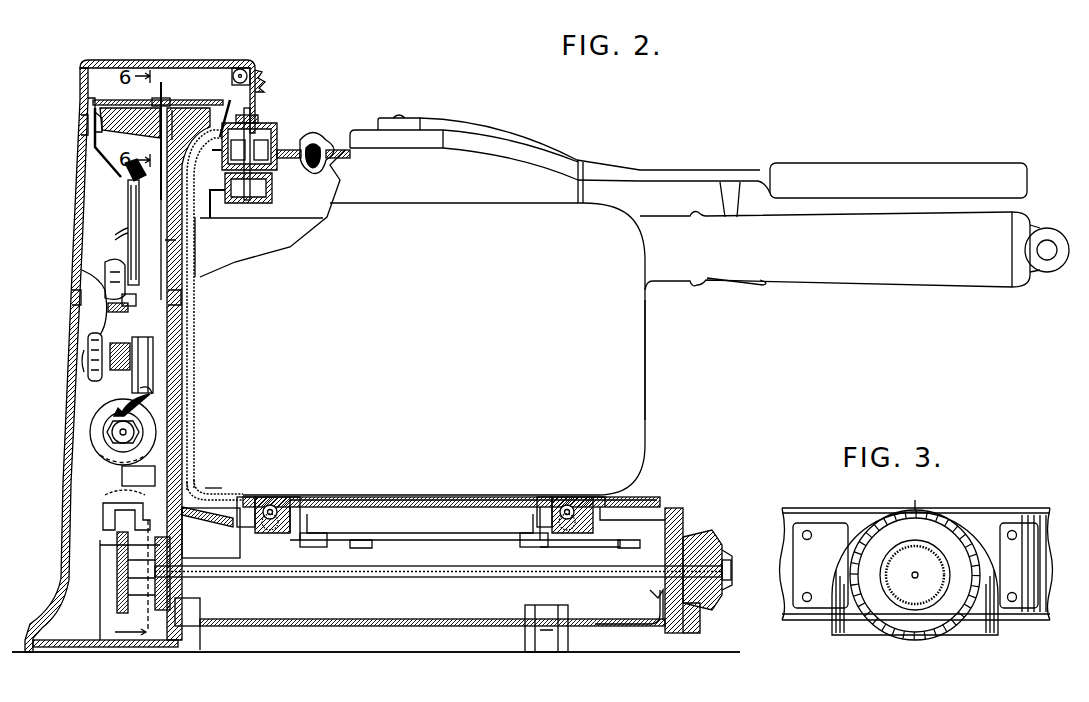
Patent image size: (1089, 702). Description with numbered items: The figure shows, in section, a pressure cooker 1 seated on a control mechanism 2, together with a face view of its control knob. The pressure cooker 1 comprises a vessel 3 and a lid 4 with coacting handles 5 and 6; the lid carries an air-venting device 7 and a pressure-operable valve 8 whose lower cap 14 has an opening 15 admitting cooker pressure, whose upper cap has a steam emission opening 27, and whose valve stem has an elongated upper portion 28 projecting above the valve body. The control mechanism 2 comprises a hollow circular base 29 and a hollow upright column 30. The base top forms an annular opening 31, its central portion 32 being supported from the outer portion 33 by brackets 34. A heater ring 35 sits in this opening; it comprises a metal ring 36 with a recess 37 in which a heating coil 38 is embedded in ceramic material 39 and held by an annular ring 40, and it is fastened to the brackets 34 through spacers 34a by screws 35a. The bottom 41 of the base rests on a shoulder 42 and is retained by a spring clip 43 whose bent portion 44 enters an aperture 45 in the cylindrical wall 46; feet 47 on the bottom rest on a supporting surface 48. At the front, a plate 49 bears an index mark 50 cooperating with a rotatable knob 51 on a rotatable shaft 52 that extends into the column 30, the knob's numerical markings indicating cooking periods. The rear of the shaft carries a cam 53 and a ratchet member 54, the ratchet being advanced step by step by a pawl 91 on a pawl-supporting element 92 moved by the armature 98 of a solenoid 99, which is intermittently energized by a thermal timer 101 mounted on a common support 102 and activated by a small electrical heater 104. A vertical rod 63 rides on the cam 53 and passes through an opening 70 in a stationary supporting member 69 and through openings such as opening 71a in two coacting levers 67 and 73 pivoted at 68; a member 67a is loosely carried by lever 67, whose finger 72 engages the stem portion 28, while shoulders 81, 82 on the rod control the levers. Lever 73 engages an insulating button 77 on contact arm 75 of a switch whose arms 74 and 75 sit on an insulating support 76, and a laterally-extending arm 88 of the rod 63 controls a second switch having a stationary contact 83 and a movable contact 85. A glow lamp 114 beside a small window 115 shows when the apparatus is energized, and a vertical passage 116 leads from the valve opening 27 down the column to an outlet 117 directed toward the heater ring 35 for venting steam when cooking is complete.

In FIG. 2, the pressure cooker 1 is at (409, 345).
In FIG. 2, the control mechanism 2 is at (64, 456).
In FIG. 2, the vessel 3 is at (646, 362).
In FIG. 2, the lid 4 is at (522, 168).
In FIG. 2, the handle 5 is at (893, 272).
In FIG. 2, the handle 6 is at (893, 162).
In FIG. 2, the air-venting device 7 is at (322, 142).
In FIG. 2, the pressure-operable valve 8 is at (278, 131).
In FIG. 2, the lower cap 14 is at (273, 192).
In FIG. 2, the opening 15 is at (249, 202).
In FIG. 2, the steam emission opening 27 is at (221, 150).
In FIG. 2, the upper portion of valve stem 28 is at (280, 128).
In FIG. 2, the hollow circular base 29 is at (676, 511).
In FIG. 3, the hollow circular base 29 is at (815, 508).
In FIG. 2, the hollow upright column 30 is at (72, 297).
In FIG. 2, the annular opening 31 is at (633, 503).
In FIG. 2, the central portion 32 is at (456, 534).
In FIG. 2, the outer portion 33 is at (632, 520).
In FIG. 2, the brackets 34 is at (380, 541).
In FIG. 2, the spacers 34a is at (322, 548).
In FIG. 2, the heater ring 35 is at (248, 496).
In FIG. 2, the screws 35a is at (358, 545).
In FIG. 2, the metal ring 36 is at (292, 498).
In FIG. 2, the recess 37 is at (290, 531).
In FIG. 2, the heating coil 38 is at (276, 497).
In FIG. 2, the ceramic material 39 is at (232, 525).
In FIG. 2, the annular ring 40 is at (268, 534).
In FIG. 2, the bottom 41 is at (358, 627).
In FIG. 2, the shoulder 42 is at (200, 630).
In FIG. 2, the spring clip 43 is at (640, 620).
In FIG. 2, the bent portion 44 is at (655, 598).
In FIG. 2, the recess or aperture 45 is at (702, 612).
In FIG. 2, the cylindrical wall 46 is at (725, 548).
In FIG. 2, the feet 47 is at (560, 640).
In FIG. 2, the supporting surface 48 is at (435, 654).
In FIG. 2, the plate 49 is at (700, 540).
In FIG. 3, the plate 49 is at (960, 520).
In FIG. 3, the index mark 50 is at (917, 510).
In FIG. 2, the rotatable knob 51 is at (725, 568).
In FIG. 3, the rotatable knob 51 is at (892, 618).
In FIG. 2, the rotatable shaft 52 is at (420, 578).
In FIG. 3, the rotatable shaft 52 is at (915, 586).
In FIG. 2, the cam 53 is at (216, 551).
In FIG. 2, the ratchet member 54 is at (118, 601).
In FIG. 2, the vertical rod 63 is at (182, 297).
In FIG. 2, the lever 67 is at (210, 99).
In FIG. 2, the member 67a is at (233, 113).
In FIG. 2, the pivot 68 is at (80, 125).
In FIG. 2, the stationary supporting member 69 is at (95, 130).
In FIG. 2, the opening 70 is at (155, 374).
In FIG. 2, the opening 71a is at (172, 112).
In FIG. 2, the extending finger 72 is at (262, 117).
In FIG. 2, the lever 73 is at (105, 104).
In FIG. 2, the contact arm 74 is at (127, 211).
In FIG. 2, the contact arm 75 is at (128, 229).
In FIG. 2, the insulating support 76 is at (165, 253).
In FIG. 2, the insulating button 77 is at (126, 176).
In FIG. 2, the shoulder 81 is at (158, 100).
In FIG. 2, the shoulder 82 is at (162, 81).
In FIG. 2, the stationary contact 83 is at (105, 282).
In FIG. 2, the movable contact 85 is at (108, 310).
In FIG. 2, the laterally-extending arm 88 is at (146, 306).
In FIG. 2, the bracket 91 is at (103, 522).
In FIG. 2, the pawl-supporting element 92 is at (100, 545).
In FIG. 2, the movable core or armature 98 is at (103, 432).
In FIG. 2, the solenoid 99 is at (95, 418).
In FIG. 2, the thermal timer 101 is at (87, 365).
In FIG. 2, the common support 102 is at (153, 358).
In FIG. 2, the small electrical heater 104 is at (90, 340).
In FIG. 2, the glow lamp 114 is at (243, 68).
In FIG. 2, the small window 115 is at (265, 78).
In FIG. 2, the vertical passage 116 is at (195, 344).
In FIG. 2, the outlet 117 is at (213, 487).